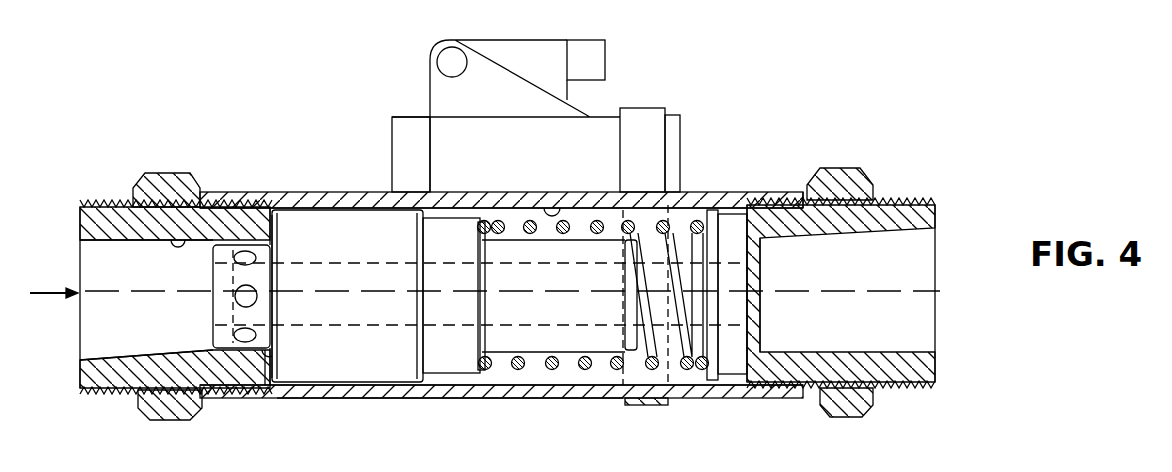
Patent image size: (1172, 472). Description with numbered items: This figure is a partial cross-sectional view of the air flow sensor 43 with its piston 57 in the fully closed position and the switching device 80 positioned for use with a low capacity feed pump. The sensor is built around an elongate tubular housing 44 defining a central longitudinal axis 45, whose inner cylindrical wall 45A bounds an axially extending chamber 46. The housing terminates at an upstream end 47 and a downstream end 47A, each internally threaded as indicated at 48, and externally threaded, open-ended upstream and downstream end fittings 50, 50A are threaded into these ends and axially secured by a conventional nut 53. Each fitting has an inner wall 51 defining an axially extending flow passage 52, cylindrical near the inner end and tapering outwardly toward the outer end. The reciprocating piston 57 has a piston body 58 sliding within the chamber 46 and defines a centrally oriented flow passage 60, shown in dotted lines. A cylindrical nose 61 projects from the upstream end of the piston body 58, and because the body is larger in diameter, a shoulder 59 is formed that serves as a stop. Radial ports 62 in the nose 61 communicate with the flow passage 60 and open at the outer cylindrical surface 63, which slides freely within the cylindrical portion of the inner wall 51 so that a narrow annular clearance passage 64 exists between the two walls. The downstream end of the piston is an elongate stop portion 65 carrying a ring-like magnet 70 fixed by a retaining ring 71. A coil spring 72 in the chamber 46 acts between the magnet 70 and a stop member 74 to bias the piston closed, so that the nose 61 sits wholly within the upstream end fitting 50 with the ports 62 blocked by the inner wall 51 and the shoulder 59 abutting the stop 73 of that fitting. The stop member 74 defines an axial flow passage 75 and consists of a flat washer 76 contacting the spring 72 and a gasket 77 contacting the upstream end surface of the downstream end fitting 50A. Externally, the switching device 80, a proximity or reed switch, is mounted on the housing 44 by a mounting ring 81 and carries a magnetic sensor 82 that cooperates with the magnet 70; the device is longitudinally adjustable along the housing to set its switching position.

The air flow sensor 43 is at (308, 86).
The tubular housing 44 is at (684, 198).
The central longitudinal axis 45 is at (115, 294).
The inner cylindrical wall 45A is at (560, 205).
The chamber 46 is at (530, 355).
The upstream end 47 is at (226, 190).
The downstream end 47A is at (800, 192).
The internal threads 48 is at (250, 200).
The upstream end fitting 50 is at (100, 388).
The downstream end fitting 50A is at (925, 365).
The inner wall 51 is at (178, 240).
The flow passage 52 is at (100, 272).
The nut 53 is at (195, 412).
The piston 57 is at (442, 378).
The piston body 58 is at (343, 402).
The shoulder 59 is at (245, 388).
The flow passage 60 is at (372, 316).
The nose 61 is at (232, 360).
The ports 62 is at (238, 292).
The outer cylindrical surface 63 is at (225, 316).
The annular clearance passage 64 is at (216, 222).
The stop portion 65 is at (598, 345).
The magnet 70 is at (505, 378).
The retaining ring 71 is at (477, 248).
The coil spring 72 is at (640, 240).
The stop 73 is at (270, 231).
The stop member 74 is at (716, 392).
The axial flow passage 75 is at (724, 324).
The flat washer 76 is at (722, 215).
The gasket 77 is at (760, 370).
The switching device 80 is at (556, 40).
The mounting ring 81 is at (650, 405).
The magnetic sensor 82 is at (410, 125).